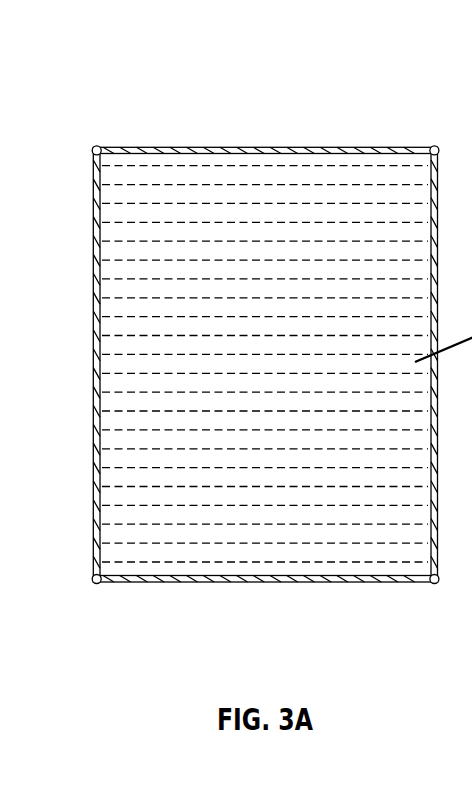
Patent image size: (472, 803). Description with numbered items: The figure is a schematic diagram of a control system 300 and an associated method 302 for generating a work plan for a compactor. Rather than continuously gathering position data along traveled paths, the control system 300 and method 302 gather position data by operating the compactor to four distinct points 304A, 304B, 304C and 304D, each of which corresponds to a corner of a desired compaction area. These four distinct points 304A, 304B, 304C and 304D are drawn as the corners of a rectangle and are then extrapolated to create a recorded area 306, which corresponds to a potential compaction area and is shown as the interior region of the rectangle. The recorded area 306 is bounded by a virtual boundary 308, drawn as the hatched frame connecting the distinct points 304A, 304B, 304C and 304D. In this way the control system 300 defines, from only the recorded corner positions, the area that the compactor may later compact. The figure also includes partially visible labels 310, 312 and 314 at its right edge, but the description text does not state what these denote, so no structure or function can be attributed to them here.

The control system 300 is at (163, 44).
The method 302 is at (265, 365).
The distinct point 304A is at (95, 145).
The distinct point 304B is at (433, 145).
The distinct point 304C is at (433, 584).
The distinct point 304D is at (96, 584).
The recorded area 306 is at (365, 172).
The virtual boundary 308 is at (225, 147).
The partially visible element 310 is at (468, 522).
The partially visible element 312 is at (459, 544).
The partially visible element 314 is at (467, 599).